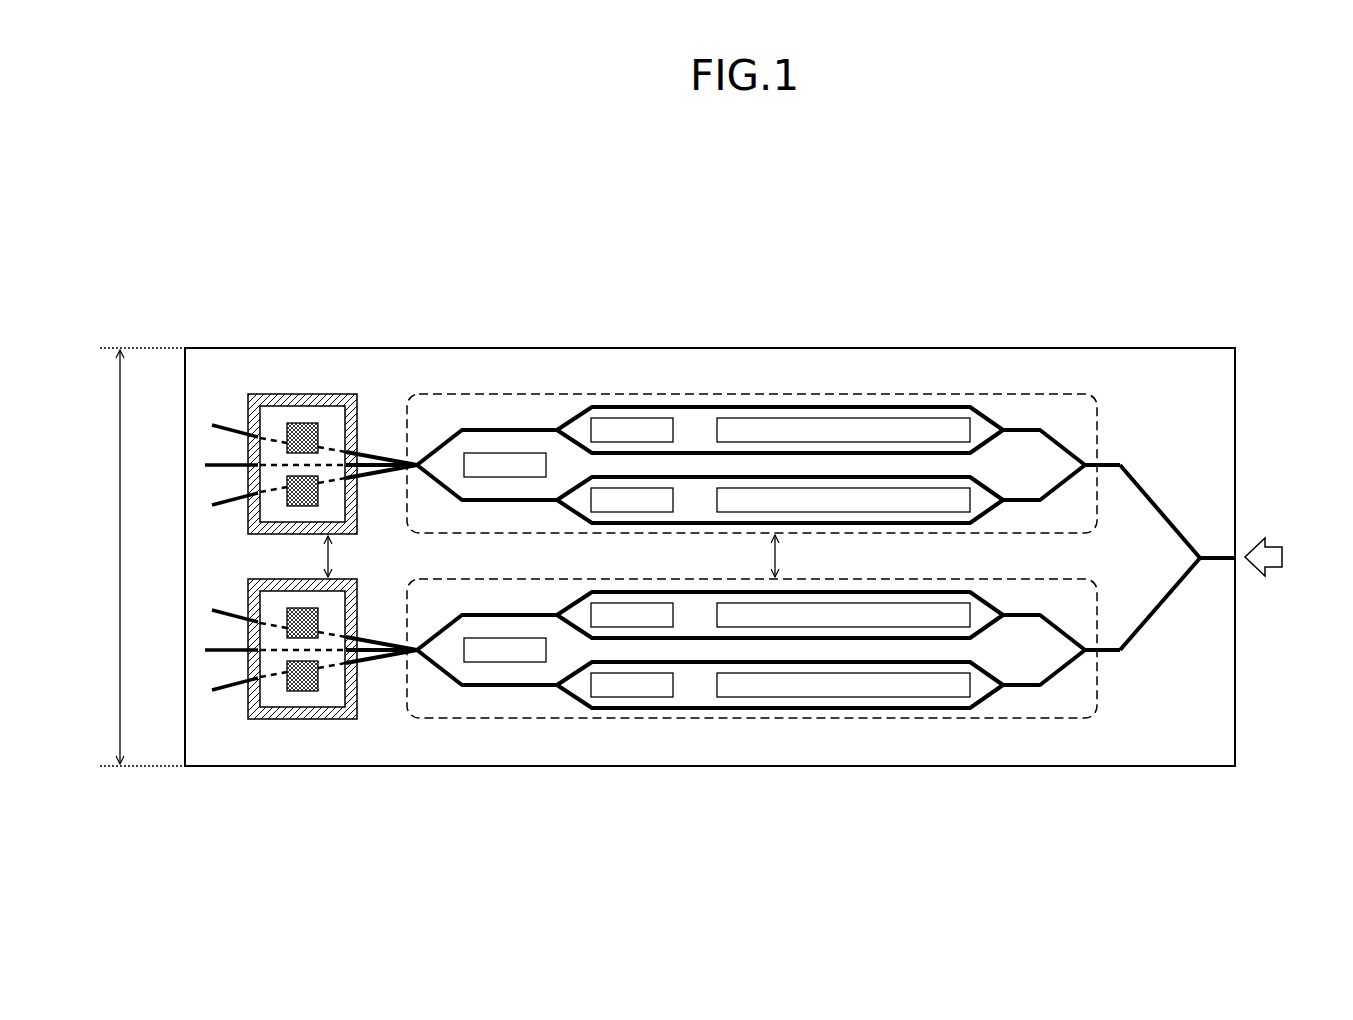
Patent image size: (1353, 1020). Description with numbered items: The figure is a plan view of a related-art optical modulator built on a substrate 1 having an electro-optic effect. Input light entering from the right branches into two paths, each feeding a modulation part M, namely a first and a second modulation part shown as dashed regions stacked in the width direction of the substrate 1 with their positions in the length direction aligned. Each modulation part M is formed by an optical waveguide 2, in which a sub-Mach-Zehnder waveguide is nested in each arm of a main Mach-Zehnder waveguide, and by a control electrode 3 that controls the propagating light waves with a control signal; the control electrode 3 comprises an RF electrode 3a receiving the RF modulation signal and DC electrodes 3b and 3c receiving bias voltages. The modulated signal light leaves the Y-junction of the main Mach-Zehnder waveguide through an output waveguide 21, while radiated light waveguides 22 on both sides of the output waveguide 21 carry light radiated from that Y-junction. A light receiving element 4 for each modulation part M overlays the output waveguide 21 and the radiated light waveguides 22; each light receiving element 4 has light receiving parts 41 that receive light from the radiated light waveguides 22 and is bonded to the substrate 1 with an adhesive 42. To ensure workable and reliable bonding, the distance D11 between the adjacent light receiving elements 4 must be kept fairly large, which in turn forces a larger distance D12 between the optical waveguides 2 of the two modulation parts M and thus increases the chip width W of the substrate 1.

The substrate 1 is at (1212, 358).
The optical waveguide 2 is at (1194, 513).
The control electrode 3 is at (717, 463).
The RF electrode 3a is at (850, 417).
The DC electrode 3b is at (640, 417).
The DC electrode 3c is at (510, 452).
The light receiving element 4 is at (330, 415).
The light receiving part 41 is at (301, 423).
The adhesive 42 is at (258, 394).
The output waveguide 21 is at (205, 462).
The radiated light waveguide 22 is at (206, 495).
The modulation part M is at (1098, 436).
The chip width W is at (137, 557).
The distance between light receiving elements D11 is at (349, 556).
The distance between optical waveguides D12 is at (797, 556).